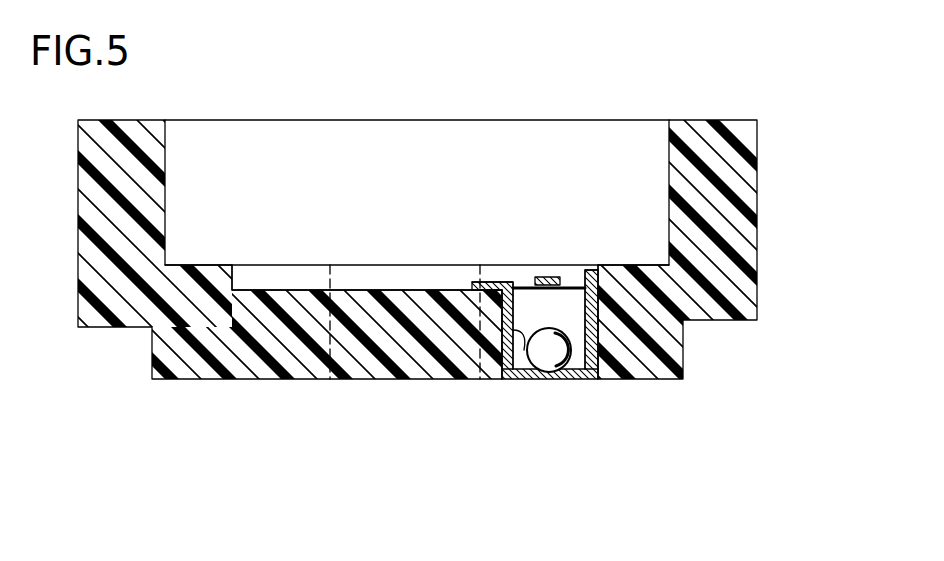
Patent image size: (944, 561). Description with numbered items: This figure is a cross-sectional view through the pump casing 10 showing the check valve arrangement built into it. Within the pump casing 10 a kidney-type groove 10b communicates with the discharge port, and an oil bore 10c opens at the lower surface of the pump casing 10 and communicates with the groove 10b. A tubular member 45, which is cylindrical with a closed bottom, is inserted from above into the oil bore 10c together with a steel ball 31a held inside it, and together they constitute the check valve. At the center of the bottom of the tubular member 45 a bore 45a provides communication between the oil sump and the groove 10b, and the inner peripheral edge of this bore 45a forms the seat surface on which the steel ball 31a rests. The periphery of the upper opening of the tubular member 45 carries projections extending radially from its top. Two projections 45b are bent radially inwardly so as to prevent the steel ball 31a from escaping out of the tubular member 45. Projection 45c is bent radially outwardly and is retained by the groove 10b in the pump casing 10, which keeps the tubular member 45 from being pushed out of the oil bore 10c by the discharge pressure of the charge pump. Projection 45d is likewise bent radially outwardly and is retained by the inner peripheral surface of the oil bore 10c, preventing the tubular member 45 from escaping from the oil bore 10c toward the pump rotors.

The pump casing 10 is at (758, 222).
The kidney-type groove 10b is at (370, 284).
The oil bore 10c is at (502, 365).
The tubular member 45 is at (608, 352).
The bore 45a is at (540, 380).
The projections 45b is at (548, 277).
The projection 45c is at (488, 282).
The projection 45d is at (587, 275).
The steel ball 31a is at (571, 372).